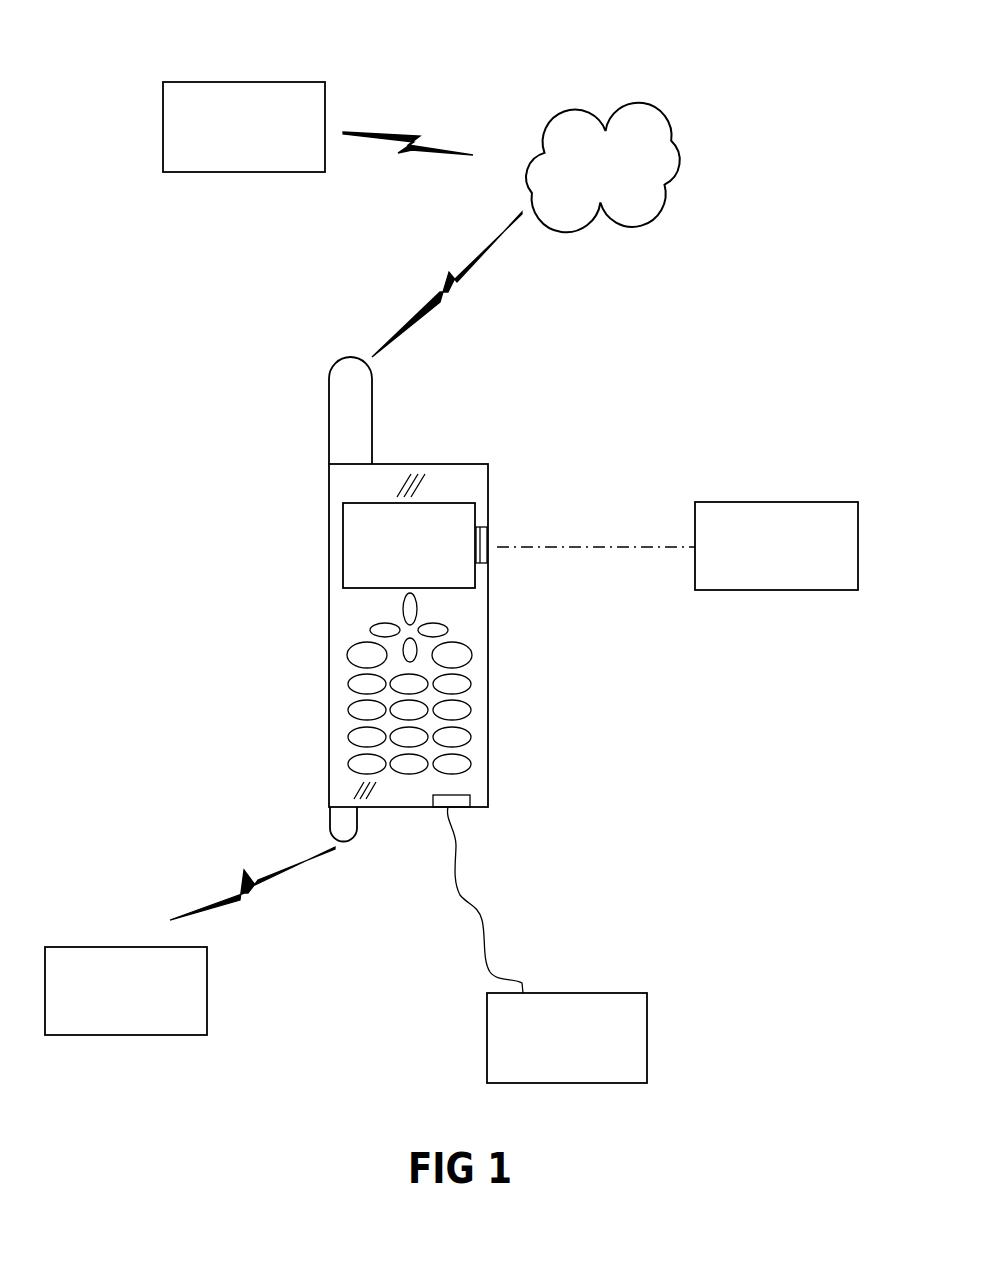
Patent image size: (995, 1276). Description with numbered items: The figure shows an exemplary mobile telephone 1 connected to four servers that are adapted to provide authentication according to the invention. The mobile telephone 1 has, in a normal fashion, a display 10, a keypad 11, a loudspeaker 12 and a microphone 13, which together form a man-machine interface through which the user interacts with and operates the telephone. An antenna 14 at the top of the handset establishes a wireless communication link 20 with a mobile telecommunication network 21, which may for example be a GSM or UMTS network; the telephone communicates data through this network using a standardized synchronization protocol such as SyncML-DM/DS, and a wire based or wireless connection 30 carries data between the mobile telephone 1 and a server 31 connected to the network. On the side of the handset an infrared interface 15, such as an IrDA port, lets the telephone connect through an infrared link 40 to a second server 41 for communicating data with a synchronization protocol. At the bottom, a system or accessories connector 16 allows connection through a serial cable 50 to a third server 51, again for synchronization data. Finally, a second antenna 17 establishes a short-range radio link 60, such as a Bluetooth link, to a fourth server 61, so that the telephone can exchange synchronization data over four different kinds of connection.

The mobile telephone 1 is at (440, 421).
The display 10 is at (353, 542).
The keypad 11 is at (355, 686).
The loudspeaker 12 is at (397, 488).
The microphone 13 is at (355, 790).
The antenna 14 is at (343, 421).
The infrared interface 15 is at (487, 538).
The system or accessories connector 16 is at (470, 798).
The second antenna 17 is at (340, 822).
The wireless communication link 20 is at (458, 292).
The mobile telecommunication network 21 is at (591, 137).
The wire based or wireless connection 30 is at (417, 135).
The server 31 is at (287, 82).
The infrared link 40 is at (587, 550).
The second server 41 is at (716, 515).
The serial cable 50 is at (453, 893).
The third server 51 is at (485, 1010).
The short-range radio link 60 is at (242, 872).
The fourth server 61 is at (75, 947).